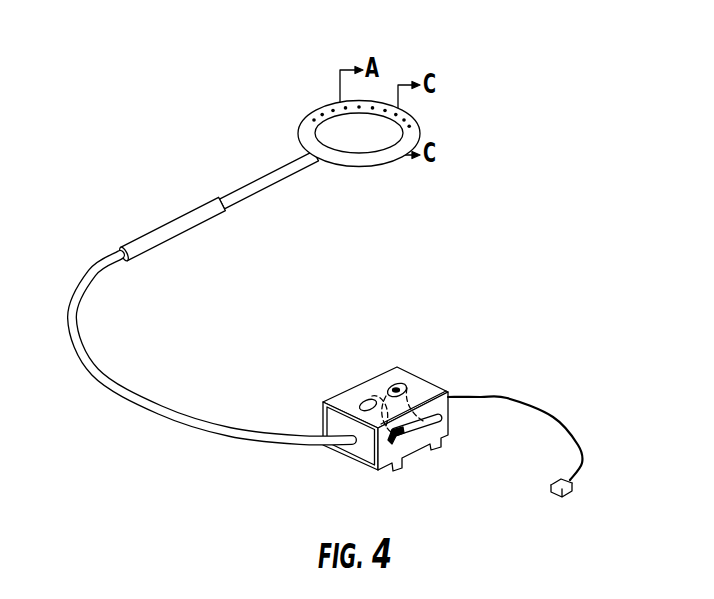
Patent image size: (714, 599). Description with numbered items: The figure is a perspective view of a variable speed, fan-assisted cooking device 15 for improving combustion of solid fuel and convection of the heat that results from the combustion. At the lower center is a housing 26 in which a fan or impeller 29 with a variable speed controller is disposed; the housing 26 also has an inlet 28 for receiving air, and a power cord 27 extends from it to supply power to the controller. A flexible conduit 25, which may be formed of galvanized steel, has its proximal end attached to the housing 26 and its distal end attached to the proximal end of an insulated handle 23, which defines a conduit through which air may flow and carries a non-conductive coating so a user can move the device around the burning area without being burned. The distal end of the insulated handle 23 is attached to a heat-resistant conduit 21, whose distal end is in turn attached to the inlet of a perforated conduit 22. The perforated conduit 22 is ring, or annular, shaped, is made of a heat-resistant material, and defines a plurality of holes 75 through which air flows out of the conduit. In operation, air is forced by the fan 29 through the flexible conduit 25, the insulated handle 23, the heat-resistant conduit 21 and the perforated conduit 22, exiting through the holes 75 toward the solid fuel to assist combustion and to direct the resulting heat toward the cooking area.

The fan-assisted cooking device 15 is at (616, 256).
The heat-resistant conduit 21 is at (245, 184).
The perforated conduit 22 is at (310, 118).
The insulated handle 23 is at (193, 207).
The flexible conduit 25 is at (100, 265).
The housing 26 is at (433, 382).
The power cord 27 is at (508, 398).
The inlet 28 is at (402, 440).
The fan 29 is at (378, 392).
The holes 75 is at (327, 118).